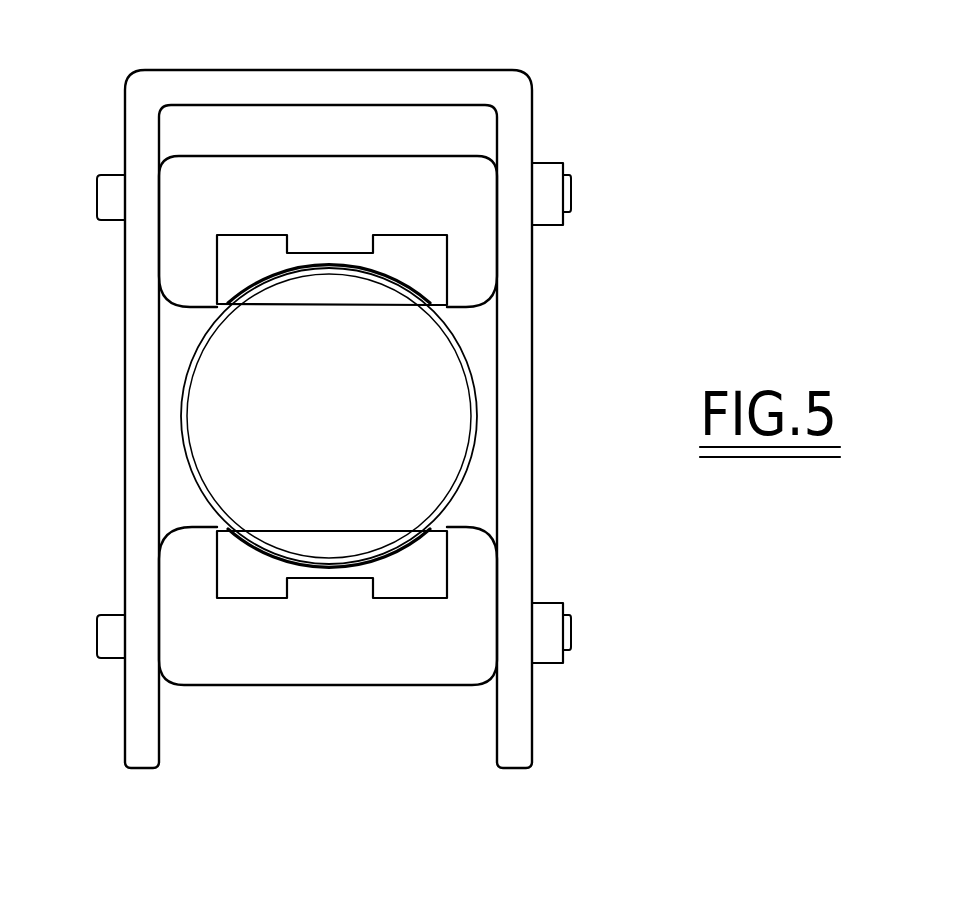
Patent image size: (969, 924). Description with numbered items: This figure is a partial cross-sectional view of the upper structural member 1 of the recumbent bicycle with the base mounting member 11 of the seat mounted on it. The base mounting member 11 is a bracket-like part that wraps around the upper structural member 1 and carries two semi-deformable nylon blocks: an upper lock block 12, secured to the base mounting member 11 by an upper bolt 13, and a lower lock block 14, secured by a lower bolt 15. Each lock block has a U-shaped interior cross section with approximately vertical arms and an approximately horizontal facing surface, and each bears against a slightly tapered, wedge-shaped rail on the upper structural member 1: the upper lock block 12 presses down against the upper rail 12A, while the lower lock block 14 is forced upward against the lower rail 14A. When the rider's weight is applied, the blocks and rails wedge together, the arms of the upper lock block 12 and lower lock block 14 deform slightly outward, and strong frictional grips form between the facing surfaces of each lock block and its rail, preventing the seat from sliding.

The upper structural member 1 is at (475, 388).
The base mounting member 11 is at (525, 78).
The upper lock block 12 is at (480, 237).
The upper rail 12A is at (232, 263).
The upper bolt 13 is at (563, 165).
The lower lock block 14 is at (475, 563).
The lower rail 14A is at (232, 557).
The lower bolt 15 is at (552, 650).